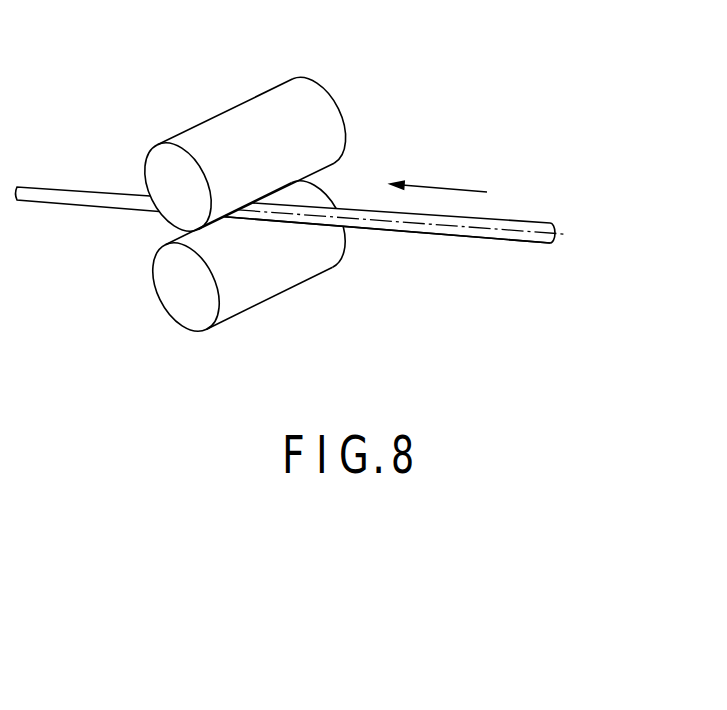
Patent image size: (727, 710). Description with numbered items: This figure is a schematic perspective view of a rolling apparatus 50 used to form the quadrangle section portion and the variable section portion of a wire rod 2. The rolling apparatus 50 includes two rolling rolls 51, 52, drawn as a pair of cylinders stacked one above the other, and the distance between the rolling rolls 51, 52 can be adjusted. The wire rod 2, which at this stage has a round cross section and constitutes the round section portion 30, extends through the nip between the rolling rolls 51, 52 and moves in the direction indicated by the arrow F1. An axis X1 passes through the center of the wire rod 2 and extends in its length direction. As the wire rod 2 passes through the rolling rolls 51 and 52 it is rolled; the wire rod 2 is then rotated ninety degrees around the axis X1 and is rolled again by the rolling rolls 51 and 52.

The rolling apparatus 50 is at (224, 179).
The rolling roll 51 is at (268, 296).
The rolling roll 52 is at (242, 117).
The wire rod 2 is at (530, 222).
The round section portion 30 is at (407, 233).
The axis X1 is at (478, 229).
The arrow indicating movement direction F1 is at (448, 187).